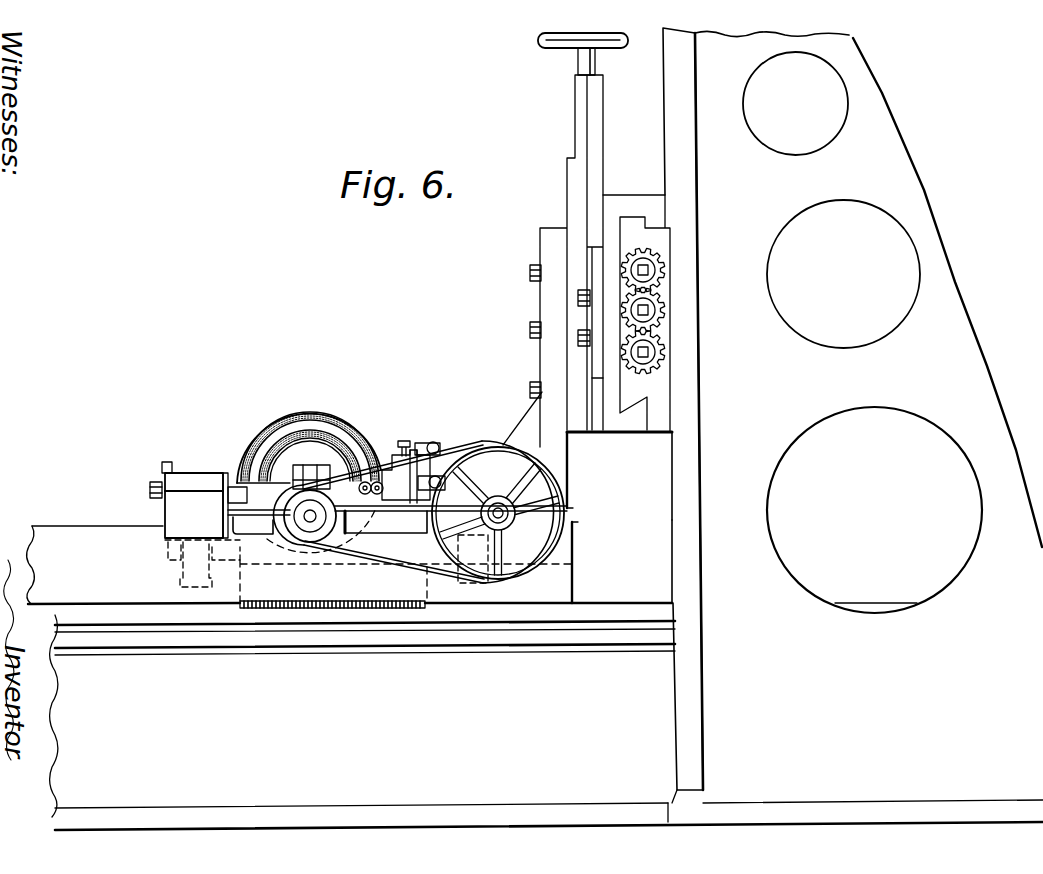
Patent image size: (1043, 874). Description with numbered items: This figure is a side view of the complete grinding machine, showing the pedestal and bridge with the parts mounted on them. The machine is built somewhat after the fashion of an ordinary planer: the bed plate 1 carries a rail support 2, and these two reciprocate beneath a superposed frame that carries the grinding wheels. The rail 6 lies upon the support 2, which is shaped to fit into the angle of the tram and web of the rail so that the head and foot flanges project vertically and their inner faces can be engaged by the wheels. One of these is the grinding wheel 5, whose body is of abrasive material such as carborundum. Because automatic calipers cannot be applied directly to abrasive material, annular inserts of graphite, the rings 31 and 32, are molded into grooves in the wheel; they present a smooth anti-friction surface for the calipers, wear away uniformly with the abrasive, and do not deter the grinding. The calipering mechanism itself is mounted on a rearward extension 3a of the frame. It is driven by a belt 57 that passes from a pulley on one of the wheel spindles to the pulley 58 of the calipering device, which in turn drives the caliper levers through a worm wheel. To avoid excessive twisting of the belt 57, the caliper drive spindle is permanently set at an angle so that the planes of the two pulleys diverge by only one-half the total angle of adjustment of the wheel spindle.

The bed plate 1 is at (546, 722).
The rail support 2 is at (402, 612).
The rearward extension of the frame 3a is at (562, 450).
The grinding wheel 5 is at (321, 408).
The rail 6 is at (558, 574).
The annular insert ring 31 is at (352, 448).
The annular insert ring 32 is at (343, 423).
The belt 57 is at (405, 552).
The pulley 58 is at (556, 543).